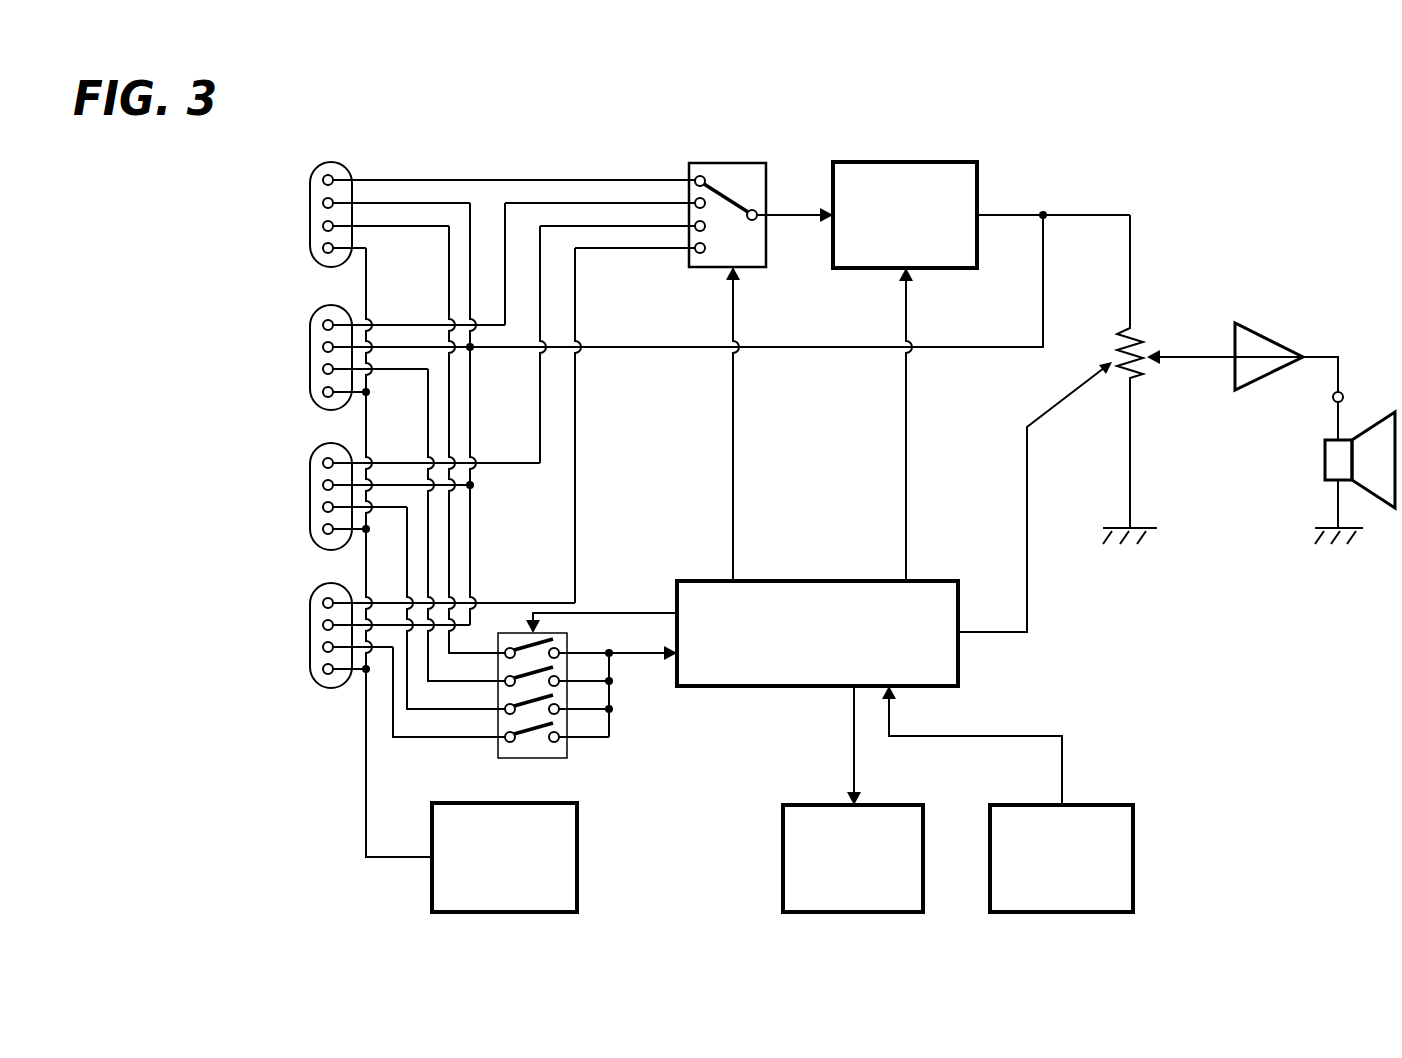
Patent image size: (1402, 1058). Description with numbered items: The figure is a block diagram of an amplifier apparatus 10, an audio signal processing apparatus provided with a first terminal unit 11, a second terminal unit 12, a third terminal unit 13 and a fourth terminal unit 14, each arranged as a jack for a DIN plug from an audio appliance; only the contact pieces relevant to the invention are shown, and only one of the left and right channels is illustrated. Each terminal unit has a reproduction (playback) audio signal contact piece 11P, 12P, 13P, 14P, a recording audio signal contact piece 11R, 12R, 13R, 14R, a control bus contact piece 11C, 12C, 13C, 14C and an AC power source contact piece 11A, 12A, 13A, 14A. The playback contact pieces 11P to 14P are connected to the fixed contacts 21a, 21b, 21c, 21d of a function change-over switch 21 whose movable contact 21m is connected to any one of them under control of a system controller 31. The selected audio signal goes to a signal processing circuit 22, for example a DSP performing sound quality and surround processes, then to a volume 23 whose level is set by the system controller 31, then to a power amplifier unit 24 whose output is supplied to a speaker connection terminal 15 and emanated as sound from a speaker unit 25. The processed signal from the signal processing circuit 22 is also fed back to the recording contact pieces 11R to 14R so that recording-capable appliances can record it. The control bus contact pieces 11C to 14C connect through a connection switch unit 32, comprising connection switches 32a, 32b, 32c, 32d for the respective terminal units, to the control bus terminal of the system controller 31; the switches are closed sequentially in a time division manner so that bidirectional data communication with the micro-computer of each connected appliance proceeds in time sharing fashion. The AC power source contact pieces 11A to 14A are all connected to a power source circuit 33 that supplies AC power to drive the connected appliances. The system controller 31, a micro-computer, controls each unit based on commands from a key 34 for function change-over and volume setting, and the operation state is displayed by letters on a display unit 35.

The amplifier apparatus 10 is at (302, 849).
The first terminal unit 11 is at (327, 163).
The reproduction audio signal contact piece 11P is at (320, 180).
The recording audio signal contact piece 11R is at (320, 203).
The control bus contact piece 11C is at (320, 226).
The AC power source contact piece 11A is at (320, 248).
The second terminal unit 12 is at (328, 305).
The reproduction audio signal contact piece 12P is at (320, 325).
The recording audio signal contact piece 12R is at (320, 347).
The control bus contact piece 12C is at (320, 369).
The AC power source contact piece 12A is at (320, 392).
The third terminal unit 13 is at (328, 445).
The reproduction audio signal contact piece 13P is at (320, 463).
The recording audio signal contact piece 13R is at (320, 485).
The control bus contact piece 13C is at (320, 507).
The AC power source contact piece 13A is at (320, 529).
The fourth terminal unit 14 is at (328, 585).
The reproduction audio signal contact piece 14P is at (320, 603).
The recording audio signal contact piece 14R is at (320, 625).
The control bus contact piece 14C is at (320, 647).
The AC power source contact piece 14A is at (320, 669).
The speaker connection terminal 15 is at (1333, 401).
The function change-over switch 21 is at (698, 213).
The fixed contact 21a is at (696, 178).
The fixed contact 21b is at (696, 202).
The fixed contact 21c is at (697, 230).
The fixed contact 21d is at (698, 252).
The movable contact 21m is at (752, 209).
The signal processing circuit 22 is at (922, 162).
The volume 23 is at (1145, 328).
The power amplifier unit 24 is at (1270, 340).
The speaker unit 25 is at (1378, 420).
The system controller 31 is at (960, 669).
The connection switch unit 32 is at (536, 663).
The connection switch 32a is at (520, 648).
The connection switch 32b is at (508, 664).
The connection switch 32c is at (508, 692).
The connection switch 32d is at (508, 720).
The power source circuit 33 is at (577, 841).
The key 34 is at (1133, 857).
The display unit 35 is at (913, 805).